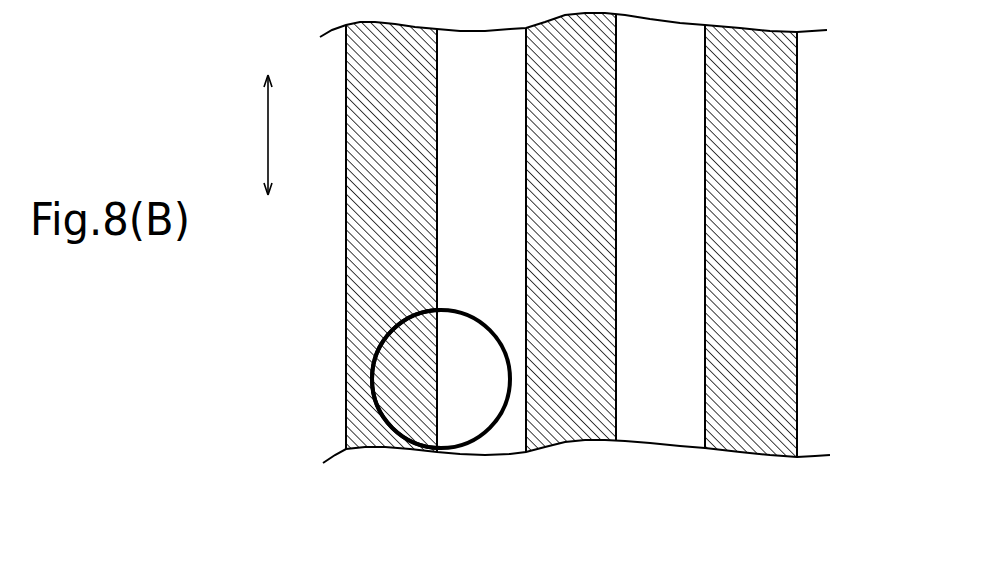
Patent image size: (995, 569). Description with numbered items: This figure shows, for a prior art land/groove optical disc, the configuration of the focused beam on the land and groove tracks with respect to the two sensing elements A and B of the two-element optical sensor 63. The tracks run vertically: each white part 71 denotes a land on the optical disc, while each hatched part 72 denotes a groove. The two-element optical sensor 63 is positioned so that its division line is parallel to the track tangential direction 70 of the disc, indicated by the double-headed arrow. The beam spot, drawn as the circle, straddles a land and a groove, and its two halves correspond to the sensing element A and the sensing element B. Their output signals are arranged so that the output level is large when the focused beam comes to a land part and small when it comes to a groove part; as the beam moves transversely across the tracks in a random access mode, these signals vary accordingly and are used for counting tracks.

The track tangential direction 70 is at (268, 135).
The white part 71 is at (683, 150).
The hatched part 72 is at (788, 216).
The two-element optical sensor 63 is at (423, 454).
The sensing element A is at (497, 375).
The sensing element B is at (385, 378).